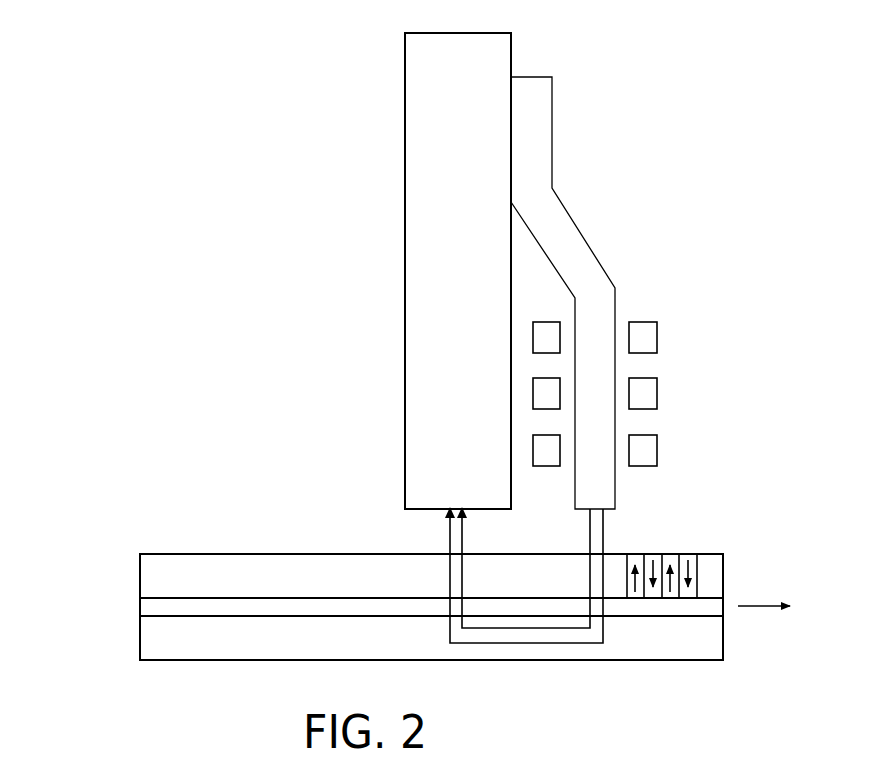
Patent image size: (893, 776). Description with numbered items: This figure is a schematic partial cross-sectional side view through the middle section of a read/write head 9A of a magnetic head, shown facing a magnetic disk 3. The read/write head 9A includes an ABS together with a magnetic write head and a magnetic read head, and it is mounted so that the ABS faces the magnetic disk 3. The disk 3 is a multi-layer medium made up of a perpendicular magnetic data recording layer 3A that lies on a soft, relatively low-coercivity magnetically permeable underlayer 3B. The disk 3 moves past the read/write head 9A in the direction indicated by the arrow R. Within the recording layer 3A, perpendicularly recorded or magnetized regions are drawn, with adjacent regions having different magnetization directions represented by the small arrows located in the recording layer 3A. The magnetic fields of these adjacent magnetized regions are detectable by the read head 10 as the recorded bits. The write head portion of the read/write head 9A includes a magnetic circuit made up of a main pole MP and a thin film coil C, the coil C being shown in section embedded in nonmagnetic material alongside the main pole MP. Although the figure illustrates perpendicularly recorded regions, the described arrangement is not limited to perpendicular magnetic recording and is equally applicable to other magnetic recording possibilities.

The read/write head 9A is at (132, 33).
The read head 10 is at (447, 281).
The main pole MP is at (599, 482).
The thin film coil C is at (643, 378).
The air bearing surface ABS is at (412, 514).
The magnetic disk 3 is at (103, 532).
The perpendicular magnetic data recording layer 3A is at (140, 570).
The magnetically permeable underlayer 3B is at (140, 603).
The direction of disk movement R is at (764, 594).